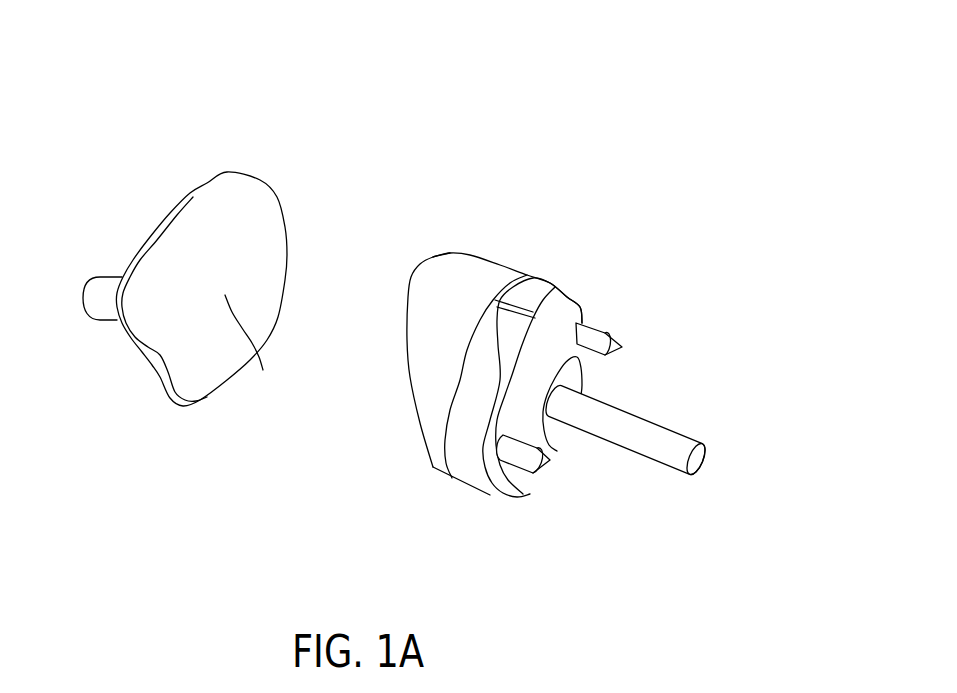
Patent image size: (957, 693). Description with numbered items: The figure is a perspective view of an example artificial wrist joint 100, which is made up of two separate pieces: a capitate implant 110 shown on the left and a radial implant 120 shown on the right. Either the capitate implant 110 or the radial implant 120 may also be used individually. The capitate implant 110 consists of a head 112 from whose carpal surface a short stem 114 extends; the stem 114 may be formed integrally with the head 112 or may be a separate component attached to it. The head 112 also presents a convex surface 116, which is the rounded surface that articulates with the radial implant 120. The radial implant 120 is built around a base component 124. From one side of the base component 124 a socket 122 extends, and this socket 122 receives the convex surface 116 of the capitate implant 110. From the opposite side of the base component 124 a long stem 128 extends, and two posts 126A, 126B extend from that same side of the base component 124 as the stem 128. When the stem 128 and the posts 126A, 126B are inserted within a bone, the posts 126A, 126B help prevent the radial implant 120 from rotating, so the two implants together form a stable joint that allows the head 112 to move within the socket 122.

The artificial wrist joint 100 is at (548, 88).
The capitate implant 110 is at (123, 405).
The head 112 is at (262, 198).
The stem 114 is at (103, 292).
The convex surface 116 is at (252, 354).
The radial implant 120 is at (692, 507).
The socket 122 is at (485, 270).
The base component 124 is at (545, 290).
The post 126A is at (603, 333).
The post 126B is at (547, 463).
The stem 128 is at (677, 440).